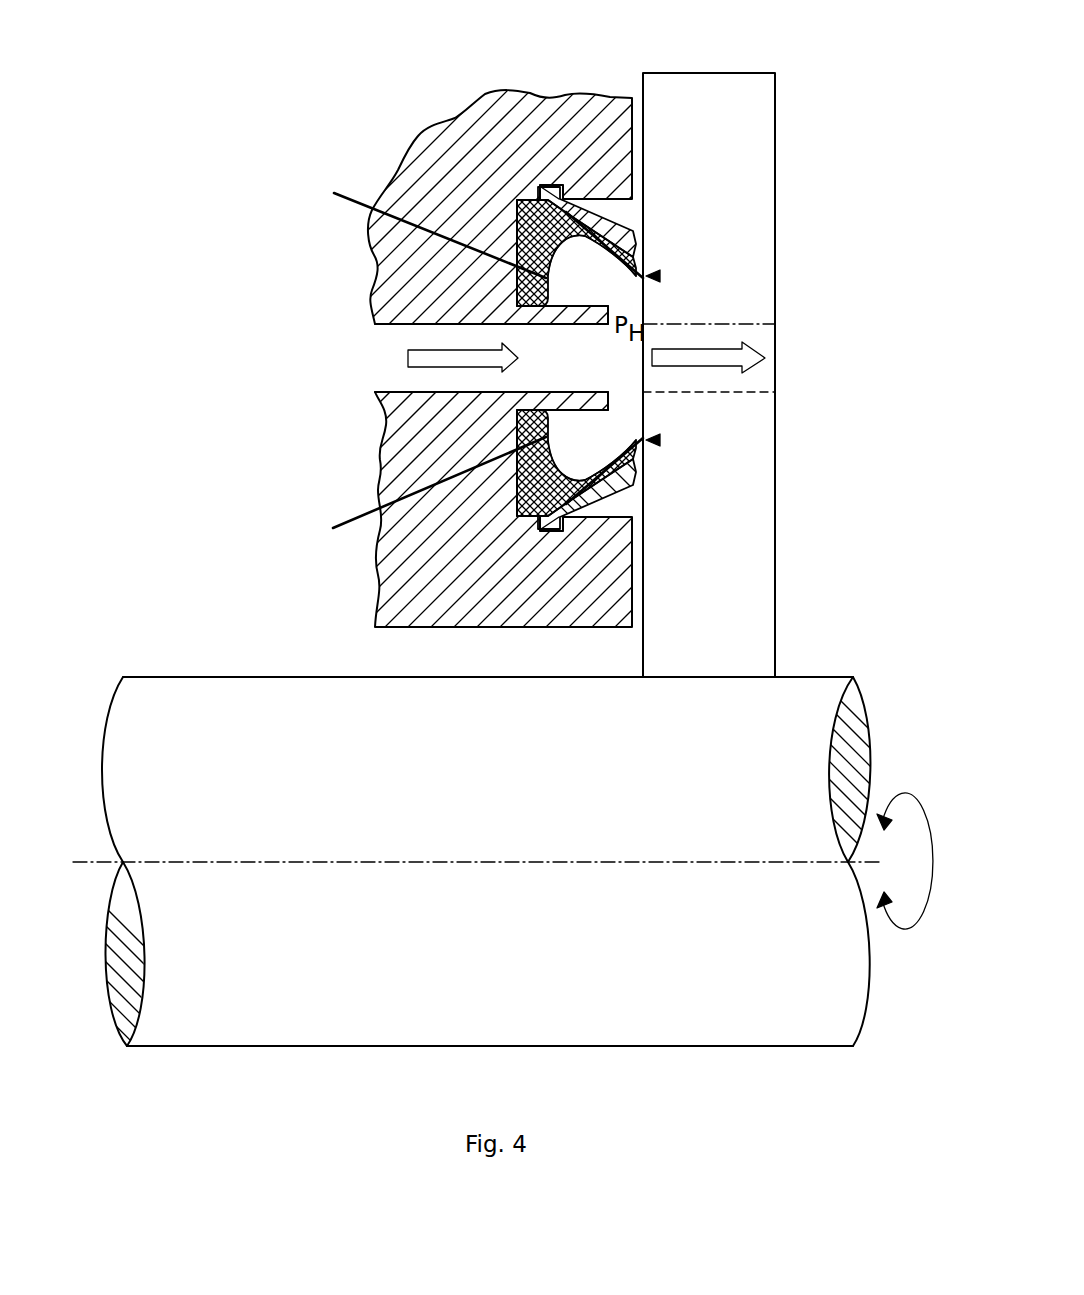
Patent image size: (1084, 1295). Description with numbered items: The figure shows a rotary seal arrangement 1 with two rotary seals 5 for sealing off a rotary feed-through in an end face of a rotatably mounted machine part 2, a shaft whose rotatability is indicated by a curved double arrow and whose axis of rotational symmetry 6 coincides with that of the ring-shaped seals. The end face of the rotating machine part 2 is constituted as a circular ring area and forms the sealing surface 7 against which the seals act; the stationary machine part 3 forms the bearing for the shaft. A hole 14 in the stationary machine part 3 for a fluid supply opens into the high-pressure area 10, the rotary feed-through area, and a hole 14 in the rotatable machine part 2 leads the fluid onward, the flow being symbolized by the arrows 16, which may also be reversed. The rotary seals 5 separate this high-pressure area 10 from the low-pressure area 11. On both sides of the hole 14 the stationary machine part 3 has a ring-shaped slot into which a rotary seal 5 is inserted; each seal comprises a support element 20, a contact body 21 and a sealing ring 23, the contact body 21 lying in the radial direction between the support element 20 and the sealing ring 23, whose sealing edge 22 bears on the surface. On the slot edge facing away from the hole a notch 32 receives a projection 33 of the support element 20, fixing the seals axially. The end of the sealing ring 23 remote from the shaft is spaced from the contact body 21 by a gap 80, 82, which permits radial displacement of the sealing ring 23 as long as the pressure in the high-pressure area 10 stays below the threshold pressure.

The rotary seal arrangement 1 is at (363, 163).
The rotatably mounted machine part 2 is at (143, 762).
The stationary machine part 3 is at (468, 122).
The rotary seal 5 is at (563, 257).
The axis of rotational symmetry 6 is at (87, 865).
The sealing surface 7 is at (643, 406).
The high-pressure area 10 is at (625, 378).
The low-pressure area 11 is at (640, 72).
The hole 14 is at (390, 357).
The arrows 16 is at (463, 363).
The support element 20 is at (606, 197).
The contact body 21 is at (532, 233).
The sealing edge contact 22 is at (660, 276).
The sealing ring 23 is at (643, 257).
The notch 32 is at (541, 186).
The projection 33 is at (560, 186).
The gap 80 is at (423, 492).
The gap 82 is at (423, 228).